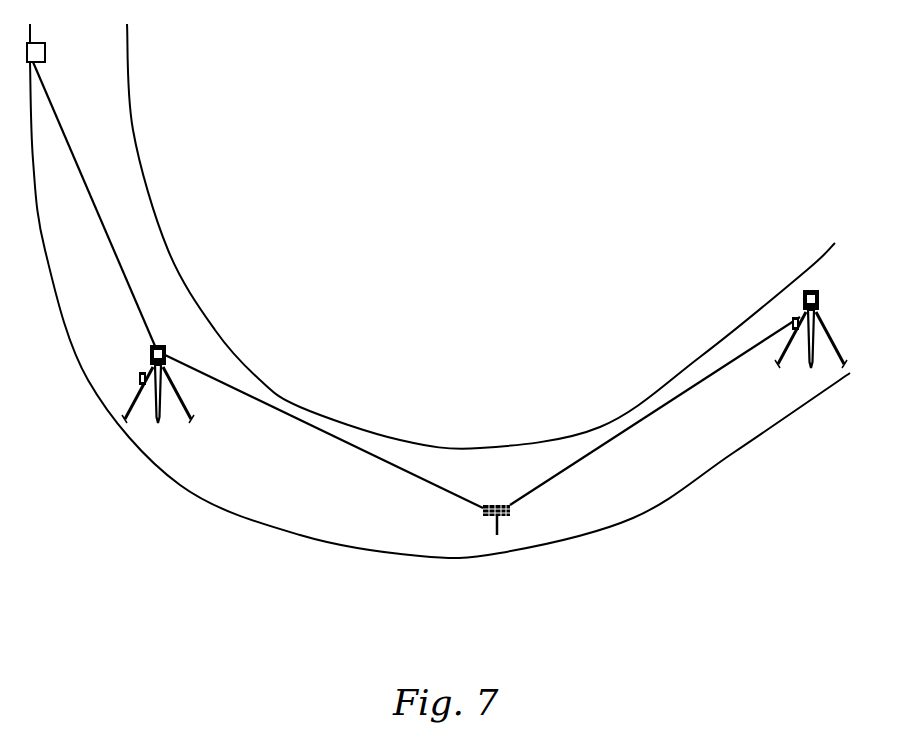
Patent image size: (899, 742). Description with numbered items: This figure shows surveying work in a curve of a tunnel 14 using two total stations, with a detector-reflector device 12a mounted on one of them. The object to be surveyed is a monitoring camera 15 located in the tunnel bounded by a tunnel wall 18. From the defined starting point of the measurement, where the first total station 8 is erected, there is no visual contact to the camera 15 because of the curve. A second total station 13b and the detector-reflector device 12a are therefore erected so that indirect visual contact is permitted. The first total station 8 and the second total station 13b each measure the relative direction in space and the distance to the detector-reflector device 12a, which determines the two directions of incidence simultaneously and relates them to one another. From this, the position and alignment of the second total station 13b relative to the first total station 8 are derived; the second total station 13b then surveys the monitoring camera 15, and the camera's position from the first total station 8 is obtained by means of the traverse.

The first total station 8 is at (778, 276).
The detector-reflector device 12a is at (577, 544).
The second total station 13b is at (113, 426).
The tunnel / passage 14 is at (462, 212).
The monitoring camera 15 is at (45, 55).
The tunnel wall 18 is at (481, 236).